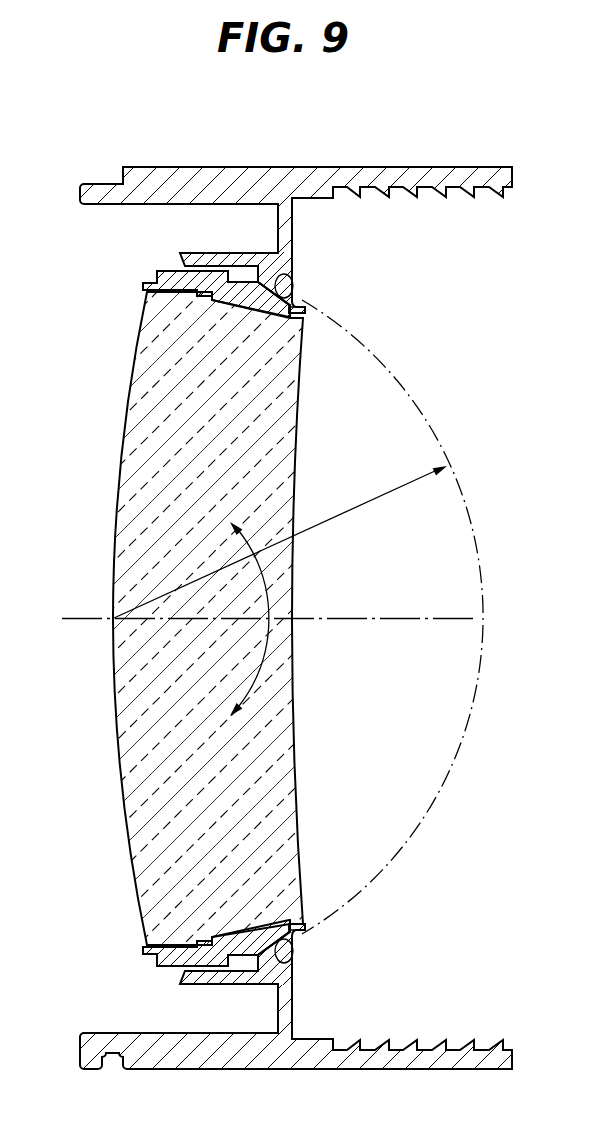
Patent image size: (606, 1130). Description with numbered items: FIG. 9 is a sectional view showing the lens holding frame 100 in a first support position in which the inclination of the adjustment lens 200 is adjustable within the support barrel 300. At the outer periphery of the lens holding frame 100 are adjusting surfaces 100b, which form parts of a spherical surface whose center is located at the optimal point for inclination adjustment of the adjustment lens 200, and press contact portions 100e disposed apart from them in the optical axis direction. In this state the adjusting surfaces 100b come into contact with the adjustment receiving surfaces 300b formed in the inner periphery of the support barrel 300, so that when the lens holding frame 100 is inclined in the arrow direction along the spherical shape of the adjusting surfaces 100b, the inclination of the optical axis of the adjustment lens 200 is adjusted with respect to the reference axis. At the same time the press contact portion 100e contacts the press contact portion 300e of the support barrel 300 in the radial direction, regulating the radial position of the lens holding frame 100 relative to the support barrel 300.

The support barrel 300 is at (186, 181).
The press contact portion 300e is at (219, 259).
The adjustment receiving surface 300b is at (300, 311).
The lens holding frame 100 is at (157, 276).
The press contact portion 100e is at (167, 270).
The adjusting surface 100b is at (290, 284).
The adjustment lens 200 is at (124, 722).